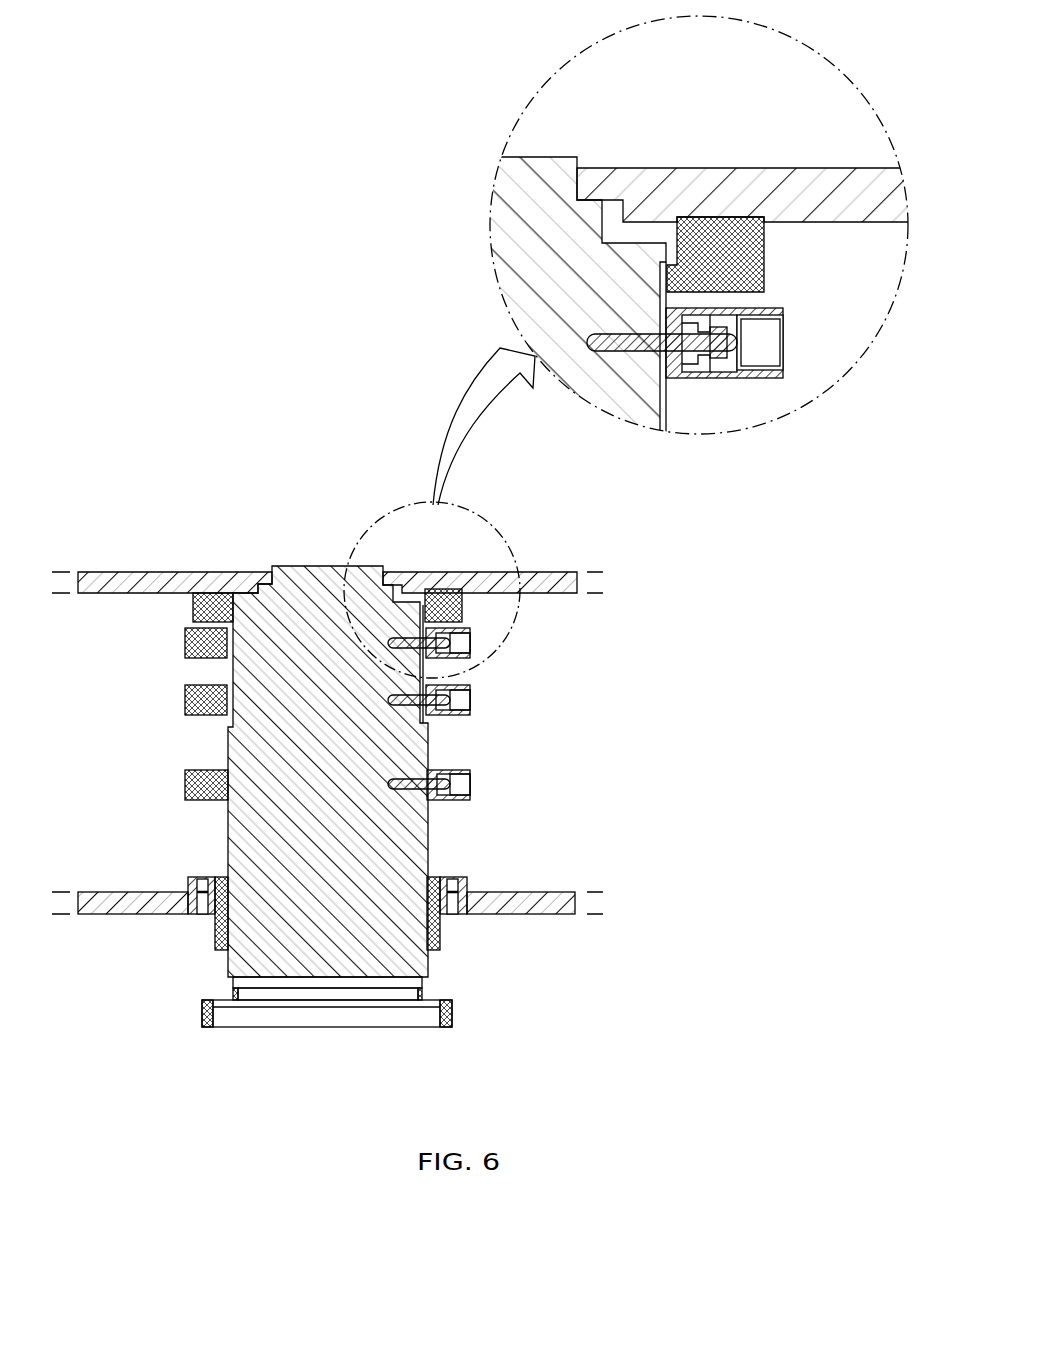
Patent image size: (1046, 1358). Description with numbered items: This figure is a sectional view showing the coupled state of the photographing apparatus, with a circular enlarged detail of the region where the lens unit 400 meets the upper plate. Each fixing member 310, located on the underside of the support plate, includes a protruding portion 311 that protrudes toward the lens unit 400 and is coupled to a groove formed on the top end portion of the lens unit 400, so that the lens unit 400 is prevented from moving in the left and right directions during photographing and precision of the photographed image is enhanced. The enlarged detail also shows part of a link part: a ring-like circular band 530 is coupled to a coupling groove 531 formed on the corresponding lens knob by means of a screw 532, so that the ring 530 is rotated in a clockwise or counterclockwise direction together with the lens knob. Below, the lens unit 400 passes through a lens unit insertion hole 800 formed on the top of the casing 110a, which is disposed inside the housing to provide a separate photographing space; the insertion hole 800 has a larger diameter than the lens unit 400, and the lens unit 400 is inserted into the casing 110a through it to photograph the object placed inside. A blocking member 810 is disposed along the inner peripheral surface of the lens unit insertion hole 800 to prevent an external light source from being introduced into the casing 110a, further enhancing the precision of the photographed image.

The casing 110a is at (548, 913).
The fixing member 310 is at (764, 257).
The protruding portion 311 is at (662, 276).
The lens unit 400 is at (410, 838).
The ring 530 is at (758, 380).
The coupling groove 531 is at (605, 343).
The screw 532 is at (737, 342).
The lens unit insertion hole 800 is at (413, 958).
The blocking member 810 is at (413, 960).